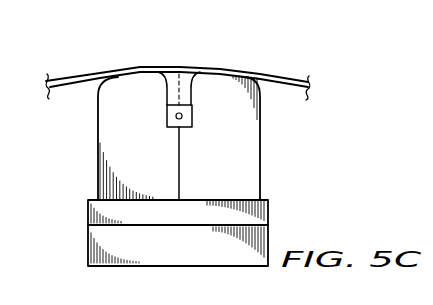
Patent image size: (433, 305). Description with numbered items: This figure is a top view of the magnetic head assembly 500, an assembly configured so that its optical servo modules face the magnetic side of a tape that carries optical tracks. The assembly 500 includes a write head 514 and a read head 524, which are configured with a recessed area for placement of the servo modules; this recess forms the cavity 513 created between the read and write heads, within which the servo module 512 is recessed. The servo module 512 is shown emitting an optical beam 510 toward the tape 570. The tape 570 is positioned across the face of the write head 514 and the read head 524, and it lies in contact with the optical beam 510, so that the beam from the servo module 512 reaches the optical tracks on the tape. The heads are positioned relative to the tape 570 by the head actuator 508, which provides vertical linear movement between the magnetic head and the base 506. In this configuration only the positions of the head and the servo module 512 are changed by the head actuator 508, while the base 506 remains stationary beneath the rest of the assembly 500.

The assembly 500 is at (325, 126).
The base 506 is at (92, 250).
The head actuator 508 is at (265, 212).
The optical beam 510 is at (169, 76).
The servo module 512 is at (184, 127).
The cavity 513 is at (192, 91).
The write head 514 is at (101, 125).
The read head 524 is at (261, 155).
The tape 570 is at (288, 73).